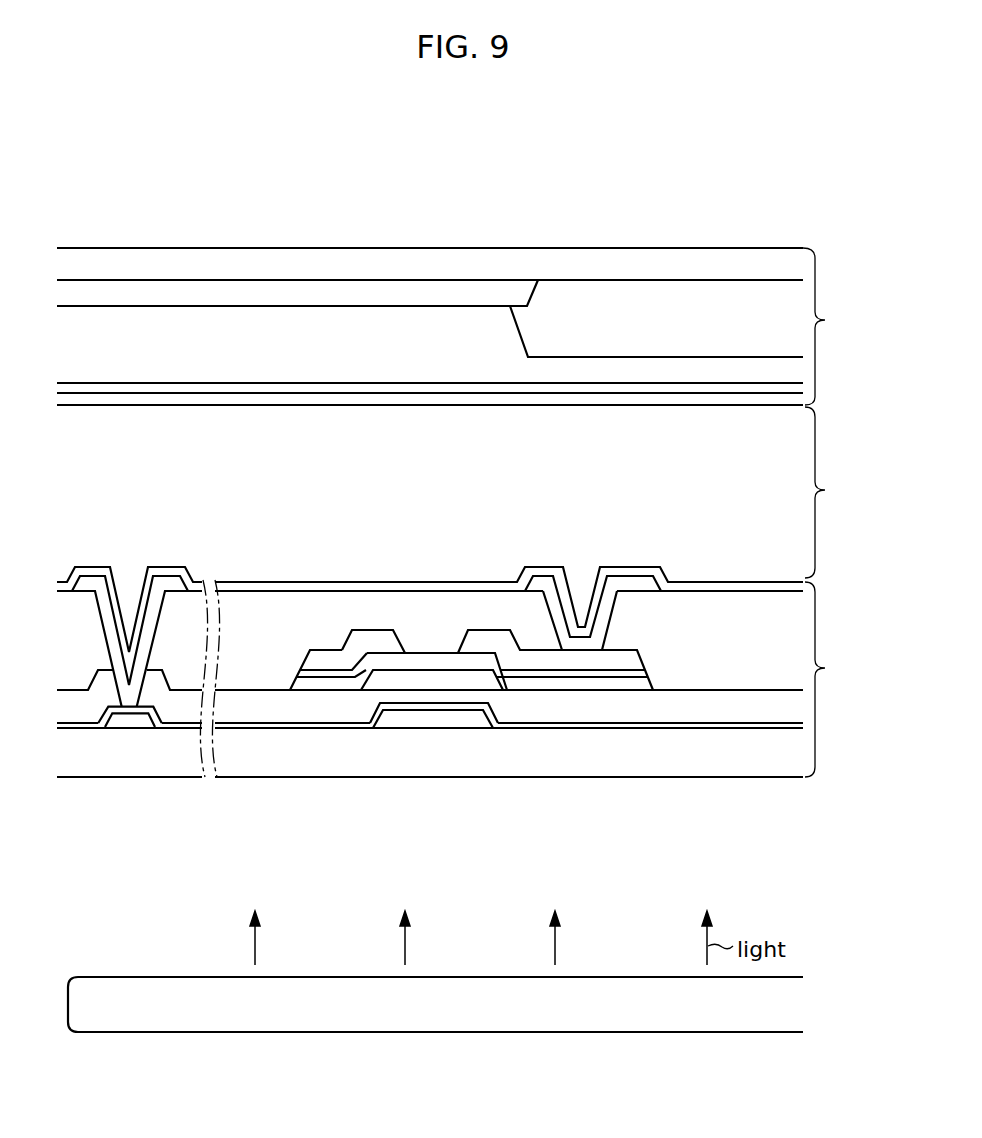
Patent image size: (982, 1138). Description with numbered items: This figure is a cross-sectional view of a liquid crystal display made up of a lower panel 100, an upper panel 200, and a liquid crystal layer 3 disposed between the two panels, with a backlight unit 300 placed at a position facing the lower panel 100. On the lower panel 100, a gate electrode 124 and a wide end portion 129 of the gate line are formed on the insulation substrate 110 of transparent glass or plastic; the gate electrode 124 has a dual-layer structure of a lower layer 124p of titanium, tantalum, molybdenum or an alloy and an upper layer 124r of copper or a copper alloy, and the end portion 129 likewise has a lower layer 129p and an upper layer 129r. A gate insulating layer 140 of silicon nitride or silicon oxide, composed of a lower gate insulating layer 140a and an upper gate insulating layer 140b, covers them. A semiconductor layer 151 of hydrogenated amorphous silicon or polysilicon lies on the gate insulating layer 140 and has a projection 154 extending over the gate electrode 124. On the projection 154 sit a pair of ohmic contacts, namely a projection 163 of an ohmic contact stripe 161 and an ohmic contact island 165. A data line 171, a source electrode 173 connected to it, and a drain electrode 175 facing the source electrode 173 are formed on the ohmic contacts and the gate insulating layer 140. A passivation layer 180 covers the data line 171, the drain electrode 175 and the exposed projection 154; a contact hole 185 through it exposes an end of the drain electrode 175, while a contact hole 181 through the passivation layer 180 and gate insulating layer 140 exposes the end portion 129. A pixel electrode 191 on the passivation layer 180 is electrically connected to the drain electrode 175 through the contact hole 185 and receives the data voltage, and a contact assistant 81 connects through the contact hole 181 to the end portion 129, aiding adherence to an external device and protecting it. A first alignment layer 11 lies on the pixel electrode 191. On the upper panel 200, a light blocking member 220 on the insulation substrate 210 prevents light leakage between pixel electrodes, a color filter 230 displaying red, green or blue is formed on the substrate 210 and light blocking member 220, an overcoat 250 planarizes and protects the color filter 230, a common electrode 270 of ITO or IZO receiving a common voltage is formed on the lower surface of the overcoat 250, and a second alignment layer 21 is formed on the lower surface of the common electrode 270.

The upper panel 200 is at (837, 326).
The insulation substrate 210 is at (587, 262).
The light blocking member 220 is at (307, 292).
The color filter 230 is at (636, 335).
The overcoat 250 is at (240, 353).
The common electrode 270 is at (397, 392).
The second alignment layer 21 is at (482, 406).
The liquid crystal layer 3 is at (824, 492).
The lower panel 100 is at (838, 679).
The insulation substrate 110 is at (738, 770).
The first alignment layer 11 is at (235, 583).
The contact assistant 81 is at (90, 579).
The contact hole 181 is at (155, 622).
The end portion of the gate line 129 is at (130, 792).
The lower layer 129p is at (111, 770).
The upper layer 129r is at (142, 720).
The gate electrode 124 is at (416, 790).
The lower layer 124p is at (397, 713).
The upper layer 124r is at (437, 706).
The gate insulating layer 140 is at (430, 773).
The lower gate insulating layer 140a is at (693, 830).
The upper gate insulating layer 140b is at (648, 706).
The semiconductor layer 151 is at (303, 687).
The projection 154 is at (458, 665).
The ohmic contact stripe 161 is at (324, 672).
The projection 163 is at (388, 655).
The ohmic contact island 165 is at (485, 655).
The data line 171 is at (313, 663).
The source electrode 173 is at (372, 638).
The drain electrode 175 is at (498, 640).
The passivation layer 180 is at (738, 612).
The contact hole 185 is at (610, 617).
The pixel electrode 191 is at (678, 580).
The backlight unit 300 is at (467, 1033).